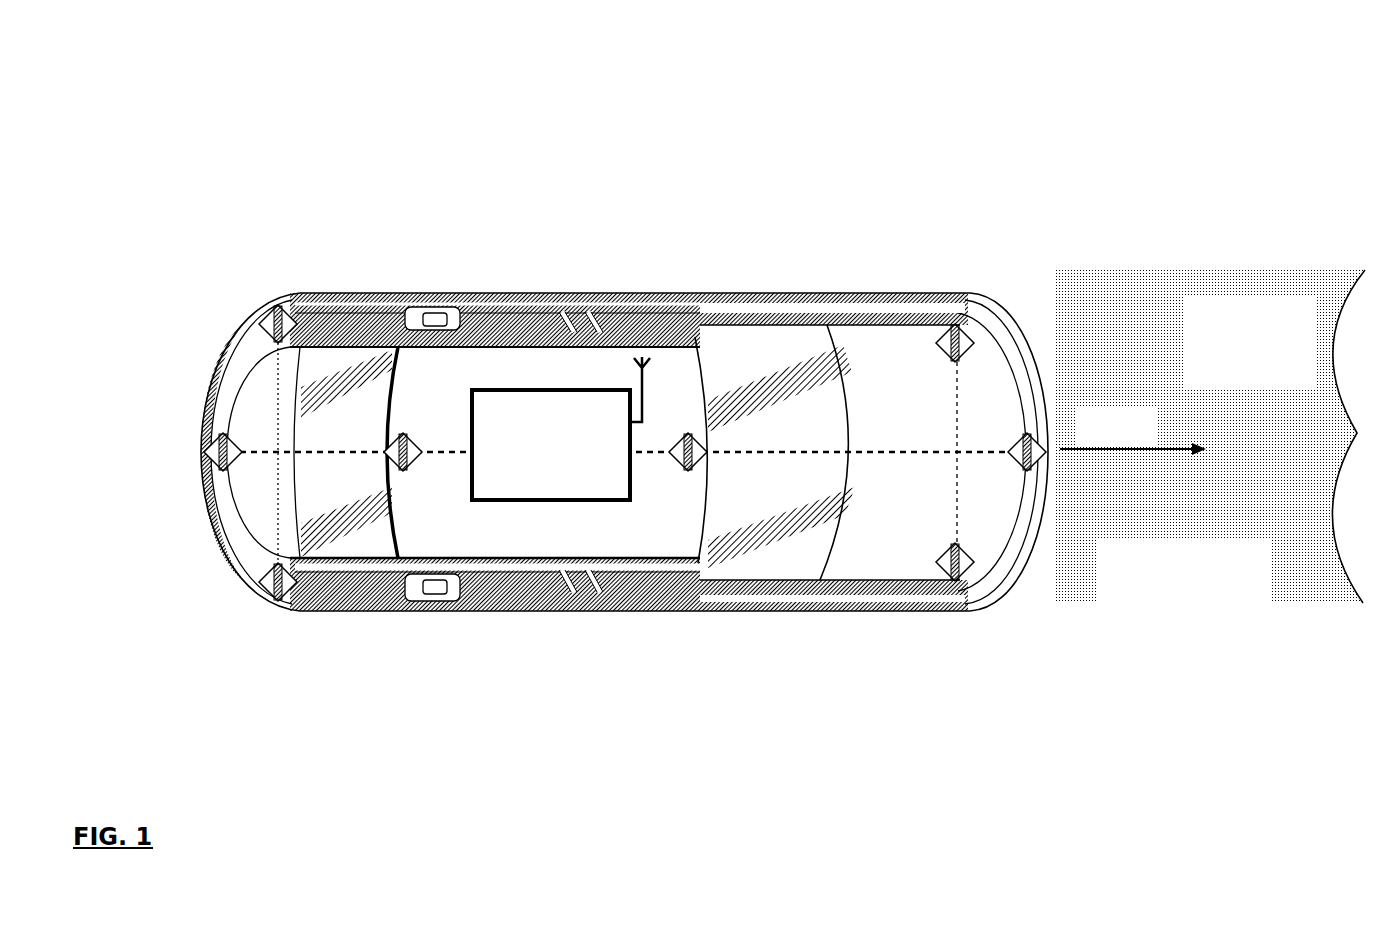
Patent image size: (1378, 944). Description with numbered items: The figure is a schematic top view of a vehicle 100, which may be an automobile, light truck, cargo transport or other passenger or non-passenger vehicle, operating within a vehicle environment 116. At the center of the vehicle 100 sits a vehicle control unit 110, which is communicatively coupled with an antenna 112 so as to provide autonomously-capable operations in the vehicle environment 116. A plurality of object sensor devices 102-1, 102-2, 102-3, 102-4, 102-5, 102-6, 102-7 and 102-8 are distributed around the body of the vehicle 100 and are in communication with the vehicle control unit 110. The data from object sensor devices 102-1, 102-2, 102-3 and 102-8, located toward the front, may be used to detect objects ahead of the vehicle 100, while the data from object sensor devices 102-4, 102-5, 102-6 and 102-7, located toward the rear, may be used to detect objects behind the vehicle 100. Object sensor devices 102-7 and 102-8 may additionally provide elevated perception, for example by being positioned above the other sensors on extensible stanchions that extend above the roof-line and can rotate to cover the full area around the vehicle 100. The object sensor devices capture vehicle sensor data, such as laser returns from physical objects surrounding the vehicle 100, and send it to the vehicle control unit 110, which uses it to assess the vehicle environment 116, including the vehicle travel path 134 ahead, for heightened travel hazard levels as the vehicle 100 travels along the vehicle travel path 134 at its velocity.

The vehicle 100 is at (850, 294).
The object sensor device 102-1 is at (1043, 462).
The object sensor device 102-2 is at (947, 357).
The object sensor device 102-3 is at (947, 545).
The object sensor device 102-4 is at (277, 303).
The object sensor device 102-5 is at (205, 437).
The object sensor device 102-6 is at (242, 557).
The object sensor device 102-7 is at (384, 468).
The object sensor device 102-8 is at (697, 466).
The vehicle control unit 110 is at (565, 503).
The antenna 112 is at (647, 411).
The vehicle environment 116 is at (1249, 124).
The vehicle travel path 134 is at (1227, 383).